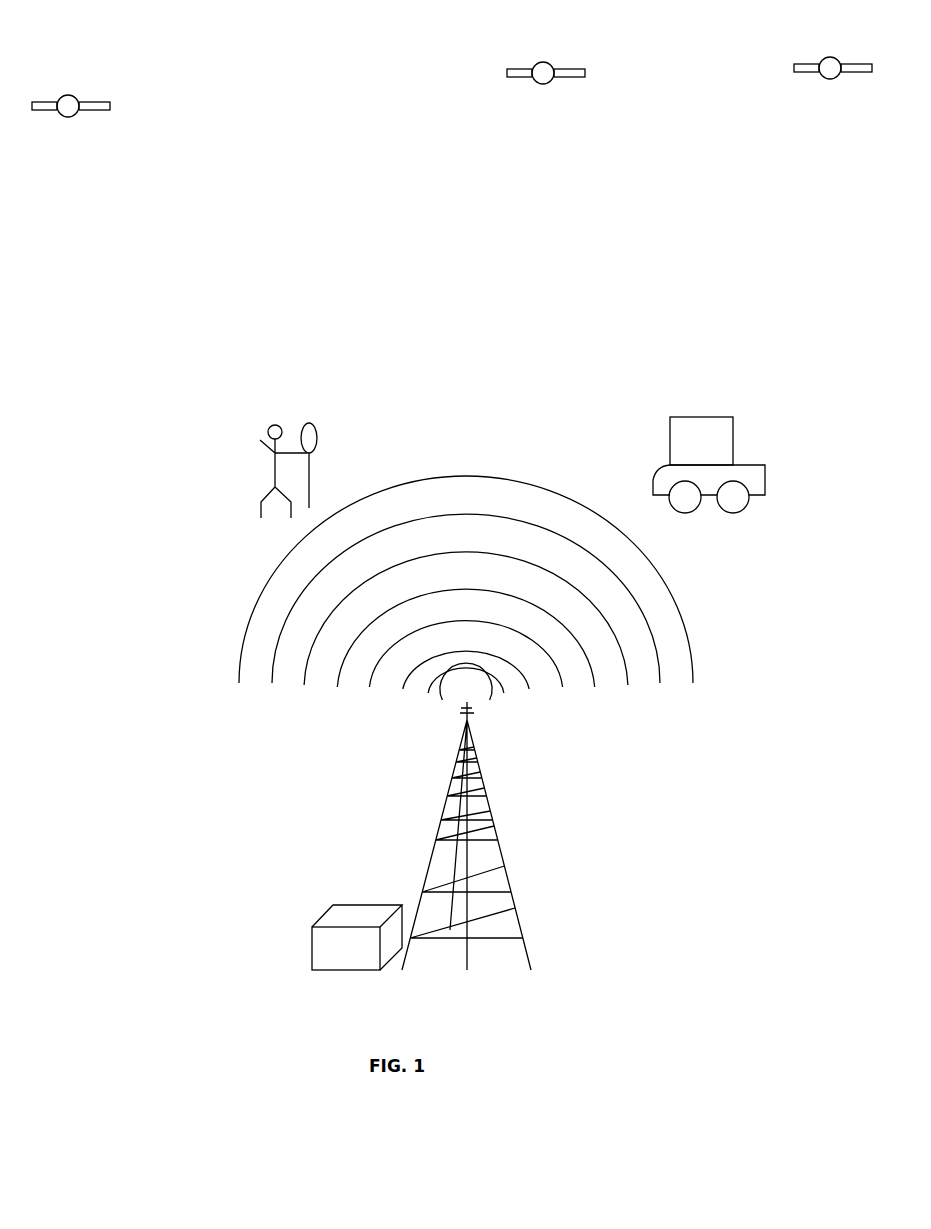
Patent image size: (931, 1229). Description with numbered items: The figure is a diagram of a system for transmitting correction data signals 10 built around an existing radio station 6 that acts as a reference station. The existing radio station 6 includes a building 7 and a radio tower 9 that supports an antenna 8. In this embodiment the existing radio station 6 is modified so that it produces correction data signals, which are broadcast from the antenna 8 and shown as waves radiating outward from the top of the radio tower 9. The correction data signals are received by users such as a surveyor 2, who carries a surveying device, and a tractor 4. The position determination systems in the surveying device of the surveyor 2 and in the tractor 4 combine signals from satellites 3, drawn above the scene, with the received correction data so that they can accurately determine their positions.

The system for transmitting correction data signals 10 is at (234, 322).
The surveyor 2 is at (248, 491).
The satellite 3 is at (452, 87).
The tractor 4 is at (709, 465).
The existing radio station 6 is at (343, 853).
The building 7 is at (322, 937).
The antenna 8 is at (487, 723).
The radio tower 9 is at (503, 850).